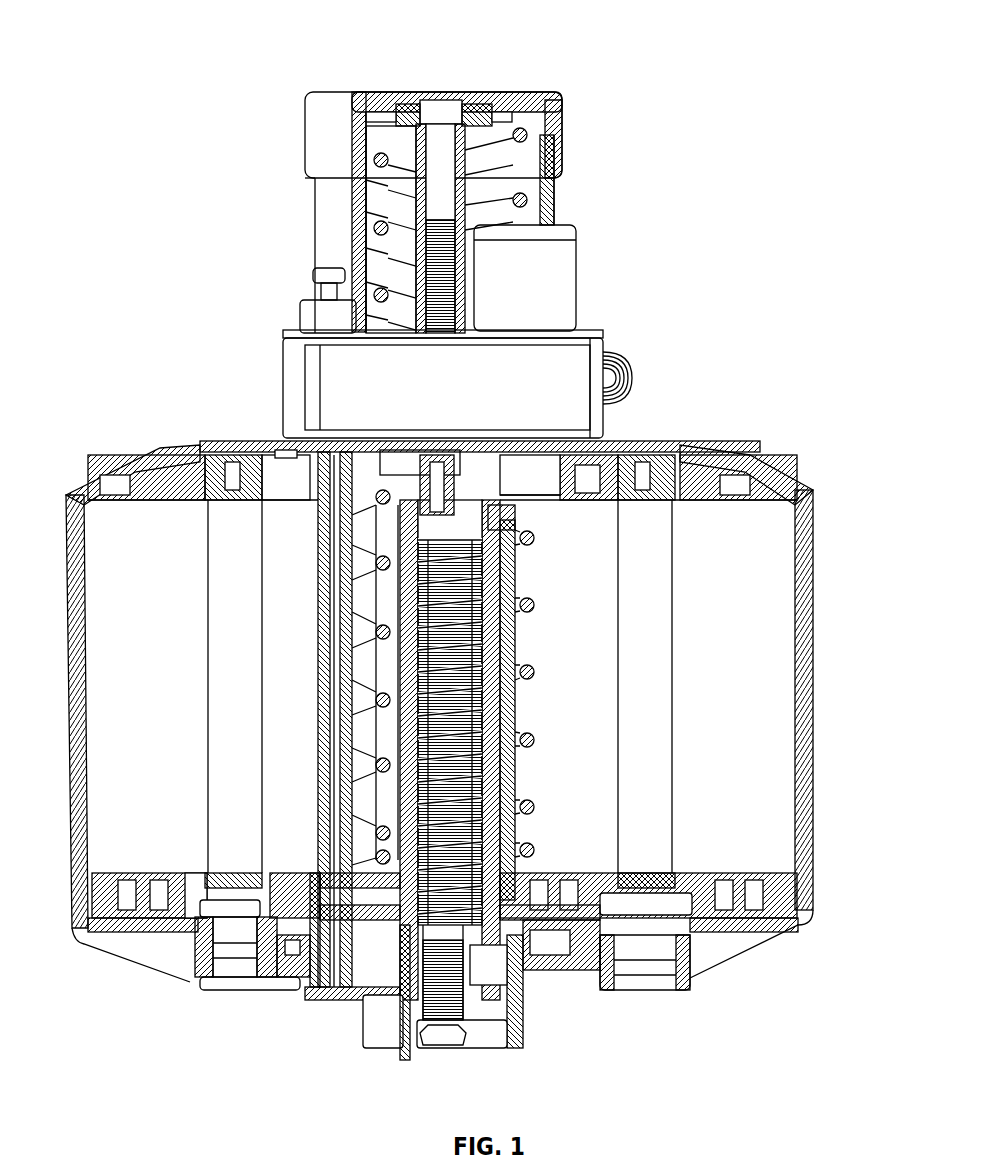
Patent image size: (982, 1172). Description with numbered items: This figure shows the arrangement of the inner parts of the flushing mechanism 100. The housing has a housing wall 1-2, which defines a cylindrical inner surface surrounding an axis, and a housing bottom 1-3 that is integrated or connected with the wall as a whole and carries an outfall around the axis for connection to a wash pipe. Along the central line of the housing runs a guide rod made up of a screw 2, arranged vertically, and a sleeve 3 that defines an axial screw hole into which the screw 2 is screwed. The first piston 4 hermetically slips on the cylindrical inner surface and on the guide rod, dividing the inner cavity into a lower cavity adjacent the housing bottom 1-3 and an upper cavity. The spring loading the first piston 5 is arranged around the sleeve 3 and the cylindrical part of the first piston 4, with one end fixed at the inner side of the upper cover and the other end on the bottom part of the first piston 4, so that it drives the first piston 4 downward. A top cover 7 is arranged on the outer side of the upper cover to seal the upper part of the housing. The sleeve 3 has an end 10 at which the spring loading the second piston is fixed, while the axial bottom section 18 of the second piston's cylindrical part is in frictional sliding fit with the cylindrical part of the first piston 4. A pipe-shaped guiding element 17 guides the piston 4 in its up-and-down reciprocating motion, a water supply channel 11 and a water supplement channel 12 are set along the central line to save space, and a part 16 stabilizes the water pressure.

The flushing mechanism 100 is at (668, 118).
The top cover 7 is at (565, 95).
The sleeve 3 is at (462, 172).
The spring loading the first piston 5 is at (457, 200).
The screw 2 is at (455, 302).
The part for stabilizing the water pressure 16 is at (495, 255).
The guiding element 17 is at (678, 441).
The housing wall 1-2 is at (815, 492).
The water supply channel 11 is at (268, 503).
The water supplement channel 12 is at (333, 500).
The end of the sleeve 10 is at (427, 522).
The first piston 4 is at (780, 872).
The housing bottom 1-3 is at (300, 990).
The axial bottom section 18 is at (405, 1048).